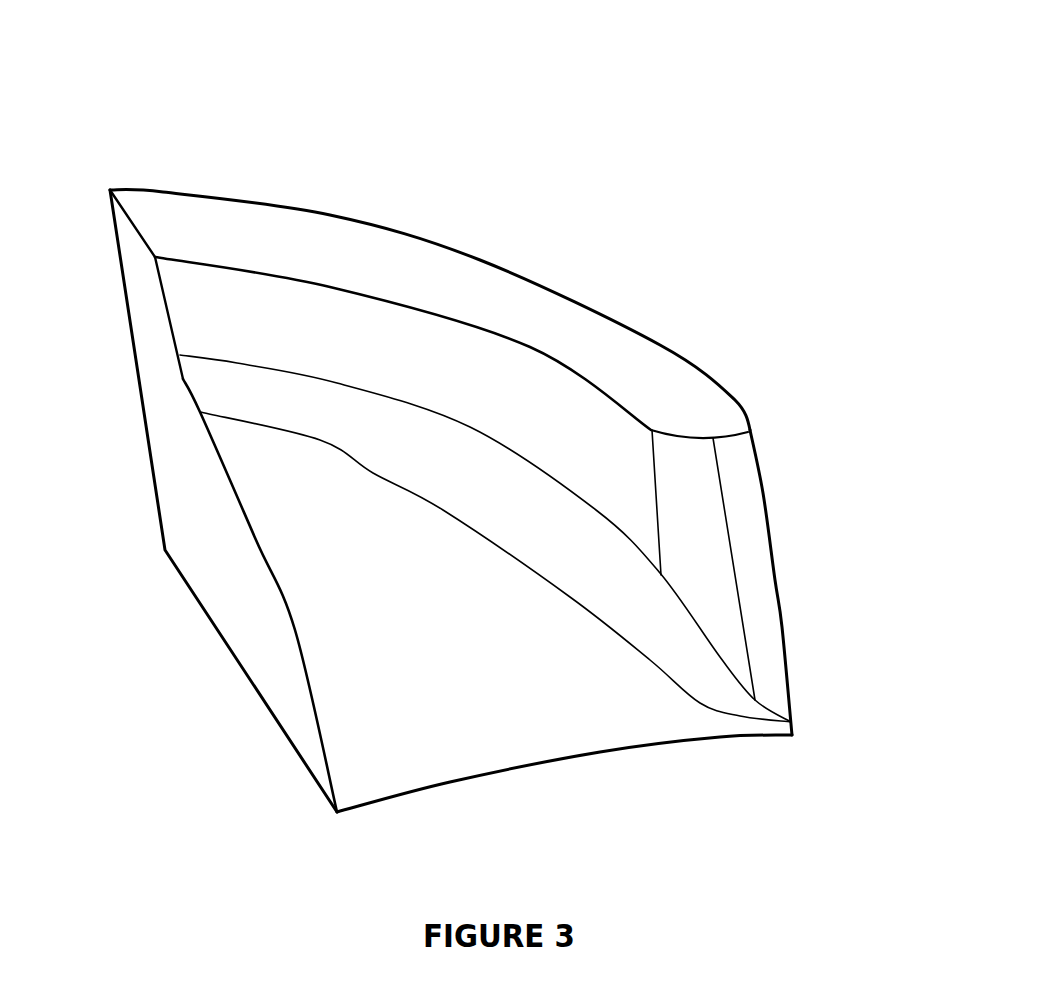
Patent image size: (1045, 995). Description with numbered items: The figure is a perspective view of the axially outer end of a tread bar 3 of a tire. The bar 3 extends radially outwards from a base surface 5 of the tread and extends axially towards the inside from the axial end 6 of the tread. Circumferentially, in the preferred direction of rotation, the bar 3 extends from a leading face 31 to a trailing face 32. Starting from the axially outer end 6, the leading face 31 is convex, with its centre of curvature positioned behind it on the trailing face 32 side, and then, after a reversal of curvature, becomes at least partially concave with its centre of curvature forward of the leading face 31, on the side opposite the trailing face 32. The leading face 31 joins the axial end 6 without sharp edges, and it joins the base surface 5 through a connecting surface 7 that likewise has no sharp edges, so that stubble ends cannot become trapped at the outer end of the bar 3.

The bar 3 is at (358, 180).
The trailing face 32 is at (482, 260).
The leading face 31 is at (435, 370).
The connecting surface 7 is at (462, 476).
The axial end 6 is at (748, 515).
The base surface 5 is at (362, 557).